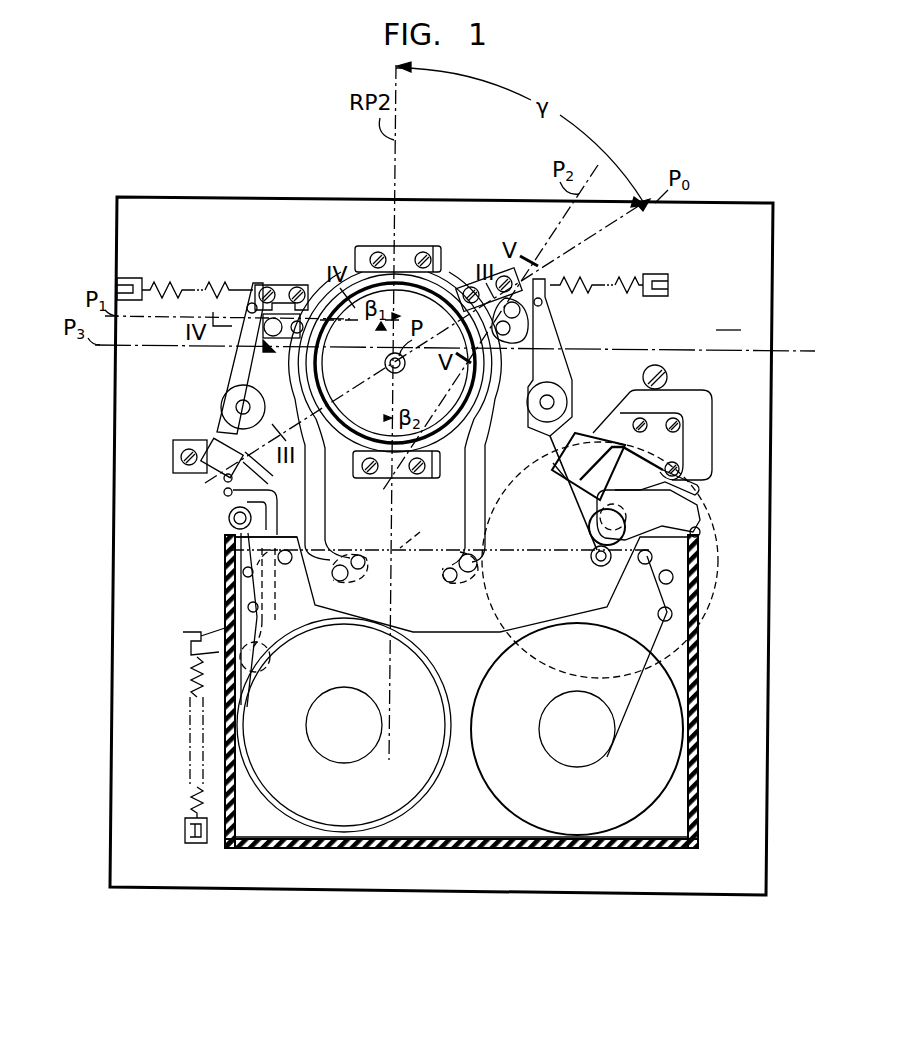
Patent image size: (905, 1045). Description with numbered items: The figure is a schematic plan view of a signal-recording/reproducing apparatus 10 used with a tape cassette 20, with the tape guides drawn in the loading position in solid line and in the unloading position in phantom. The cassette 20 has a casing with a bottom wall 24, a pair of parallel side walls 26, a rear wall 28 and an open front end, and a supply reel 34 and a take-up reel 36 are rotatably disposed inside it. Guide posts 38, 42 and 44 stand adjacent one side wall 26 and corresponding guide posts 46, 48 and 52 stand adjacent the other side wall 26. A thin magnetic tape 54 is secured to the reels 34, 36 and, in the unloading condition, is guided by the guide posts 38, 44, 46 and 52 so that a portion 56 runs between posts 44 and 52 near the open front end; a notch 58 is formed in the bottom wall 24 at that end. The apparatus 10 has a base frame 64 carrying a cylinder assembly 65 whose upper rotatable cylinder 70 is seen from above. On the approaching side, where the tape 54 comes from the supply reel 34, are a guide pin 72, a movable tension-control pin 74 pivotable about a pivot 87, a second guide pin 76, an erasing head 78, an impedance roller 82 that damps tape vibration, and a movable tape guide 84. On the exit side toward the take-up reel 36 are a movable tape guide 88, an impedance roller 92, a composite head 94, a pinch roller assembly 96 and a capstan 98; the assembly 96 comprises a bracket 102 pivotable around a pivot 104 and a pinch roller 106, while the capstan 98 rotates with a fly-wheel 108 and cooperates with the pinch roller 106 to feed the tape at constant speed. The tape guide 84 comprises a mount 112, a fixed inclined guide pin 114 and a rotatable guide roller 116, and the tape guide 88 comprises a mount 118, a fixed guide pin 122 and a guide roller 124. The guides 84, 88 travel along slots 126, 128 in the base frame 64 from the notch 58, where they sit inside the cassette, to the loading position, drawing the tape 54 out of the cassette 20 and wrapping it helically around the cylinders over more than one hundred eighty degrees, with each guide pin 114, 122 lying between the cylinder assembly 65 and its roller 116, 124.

The signal-recording/reproducing apparatus 10 is at (714, 163).
The tape cassette 20 is at (708, 752).
The bottom wall 24 is at (473, 824).
The side walls 26 is at (225, 597).
The rear wall 28 is at (470, 850).
The supply reel 34 is at (350, 820).
The take-up reel 36 is at (575, 820).
The guide post 38 is at (248, 607).
The guide post 42 is at (243, 572).
The guide post 44 is at (278, 557).
The guide post 46 is at (672, 613).
The guide post 48 is at (673, 577).
The guide post 52 is at (652, 556).
The magnetic tape 54 is at (228, 538).
The portion of the tape 56 is at (425, 537).
The notch 58 is at (487, 627).
The base frame 64 is at (730, 318).
The cylinder assembly 65 is at (450, 285).
The upper rotatable cylinder 70 is at (425, 298).
The pin 72 is at (230, 518).
The movable pin 74 is at (224, 488).
The pin 76 is at (274, 500).
The erasing head 78 is at (266, 478).
The impedance roller 82 is at (228, 405).
The movable tape guide 84 is at (262, 345).
The pivot 87 is at (272, 662).
The movable tape guide 88 is at (530, 335).
The impedance roller 92 is at (569, 396).
The composite head 94 is at (565, 474).
The pinch roller assembly 96 is at (712, 504).
The capstan 98 is at (591, 562).
The bracket 102 is at (705, 482).
The pivot 104 is at (703, 528).
The pinch roller 106 is at (597, 514).
The fly-wheel 108 is at (690, 657).
The mount 112 is at (290, 347).
The guide pin 114 is at (300, 290).
The guide roller 116 is at (268, 287).
The mount 118 is at (548, 313).
The guide pin 122 is at (530, 345).
The guide roller 124 is at (520, 308).
The slot 126 is at (326, 503).
The slot 128 is at (466, 493).